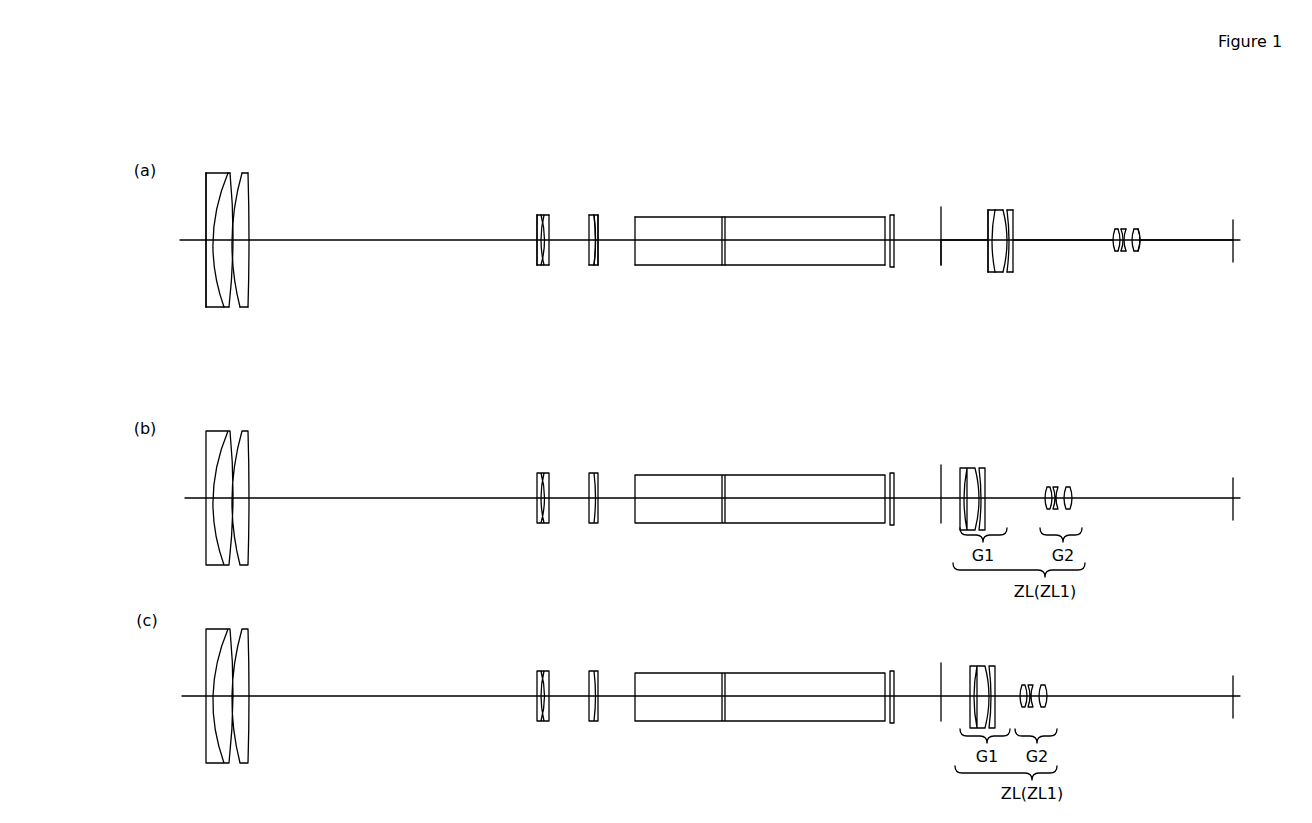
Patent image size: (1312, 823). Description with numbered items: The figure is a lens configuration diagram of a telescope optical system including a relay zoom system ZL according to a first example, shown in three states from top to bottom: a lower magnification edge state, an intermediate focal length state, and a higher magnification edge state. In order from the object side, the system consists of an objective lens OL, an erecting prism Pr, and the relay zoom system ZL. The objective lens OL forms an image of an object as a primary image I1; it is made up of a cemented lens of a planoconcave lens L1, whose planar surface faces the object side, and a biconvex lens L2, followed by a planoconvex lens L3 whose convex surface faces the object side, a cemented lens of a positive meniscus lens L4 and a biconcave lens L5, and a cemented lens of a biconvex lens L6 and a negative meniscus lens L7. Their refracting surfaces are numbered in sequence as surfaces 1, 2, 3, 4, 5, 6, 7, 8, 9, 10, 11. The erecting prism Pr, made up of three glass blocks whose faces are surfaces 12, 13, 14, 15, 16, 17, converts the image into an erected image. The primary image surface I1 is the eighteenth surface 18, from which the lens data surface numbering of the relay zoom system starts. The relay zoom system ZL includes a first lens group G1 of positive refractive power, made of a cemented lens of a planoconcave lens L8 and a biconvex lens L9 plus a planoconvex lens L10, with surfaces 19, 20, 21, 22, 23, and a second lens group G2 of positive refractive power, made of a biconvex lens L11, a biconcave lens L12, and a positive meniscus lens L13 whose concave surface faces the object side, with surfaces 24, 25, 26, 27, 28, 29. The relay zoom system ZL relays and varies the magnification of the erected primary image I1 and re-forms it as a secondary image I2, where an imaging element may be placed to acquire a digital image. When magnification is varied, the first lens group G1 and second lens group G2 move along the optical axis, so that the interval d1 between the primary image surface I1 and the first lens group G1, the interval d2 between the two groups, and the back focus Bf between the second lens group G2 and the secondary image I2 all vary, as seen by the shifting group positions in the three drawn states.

The first lens surface 1 is at (205, 299).
The second lens surface 2 is at (216, 301).
The third lens surface 3 is at (228, 302).
The fourth lens surface 4 is at (239, 301).
The fifth lens surface 5 is at (248, 300).
The sixth lens surface 6 is at (537, 267).
The seventh lens surface 7 is at (542, 266).
The eighth lens surface 8 is at (549, 266).
The ninth lens surface 9 is at (590, 267).
The tenth lens surface 10 is at (594, 266).
The eleventh lens surface 11 is at (598, 266).
The twelfth surface 12 is at (636, 263).
The thirteenth surface 13 is at (723, 266).
The fourteenth surface 14 is at (724, 250).
The fifteenth surface 15 is at (888, 263).
The sixteenth surface 16 is at (892, 267).
The seventeenth surface 17 is at (895, 263).
The eighteenth surface 18 is at (941, 266).
The nineteenth surface 19 is at (988, 269).
The twentieth surface 20 is at (993, 270).
The twenty-first surface 21 is at (1001, 273).
The twenty-second surface 22 is at (1005, 272).
The twenty-third surface 23 is at (1030, 256).
The twenty-fourth surface 24 is at (1113, 252).
The twenty-fifth surface 25 is at (1118, 252).
The twenty-sixth surface 26 is at (1123, 252).
The twenty-seventh surface 27 is at (1128, 252).
The twenty-eighth surface 28 is at (1133, 252).
The twenty-ninth surface 29 is at (1140, 252).
The planoconcave lens L1 is at (213, 172).
The biconvex lens L2 is at (229, 172).
The planoconvex lens L3 is at (244, 172).
The positive meniscus lens L4 is at (540, 214).
The biconcave lens L5 is at (548, 214).
The biconvex lens L6 is at (591, 214).
The negative meniscus lens L7 is at (597, 214).
The planoconcave lens L8 is at (990, 209).
The biconvex lens L9 is at (1000, 209).
The planoconvex lens L10 is at (1010, 209).
The biconvex lens L11 is at (1116, 229).
The biconcave lens L12 is at (1122, 229).
The positive meniscus lens L13 is at (1136, 229).
The primary image I1 is at (941, 207).
The secondary image I2 is at (1233, 220).
The interval between primary image surface and first lens group d1 is at (963, 240).
The interval between first lens group and second lens group d2 is at (1066, 240).
The back focus Bf is at (1195, 240).
The objective lens OL is at (610, 361).
The erecting prism Pr is at (635, 361).
The first lens group G1 is at (999, 255).
The second lens group G2 is at (1117, 255).
The relay zoom system ZL is at (977, 359).